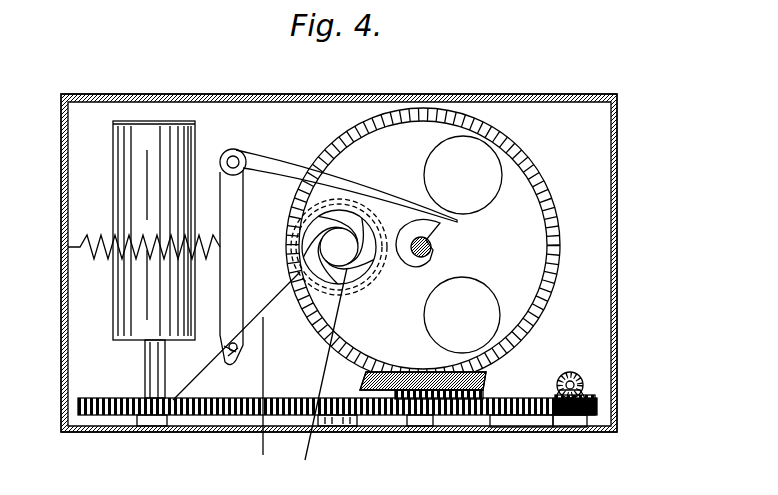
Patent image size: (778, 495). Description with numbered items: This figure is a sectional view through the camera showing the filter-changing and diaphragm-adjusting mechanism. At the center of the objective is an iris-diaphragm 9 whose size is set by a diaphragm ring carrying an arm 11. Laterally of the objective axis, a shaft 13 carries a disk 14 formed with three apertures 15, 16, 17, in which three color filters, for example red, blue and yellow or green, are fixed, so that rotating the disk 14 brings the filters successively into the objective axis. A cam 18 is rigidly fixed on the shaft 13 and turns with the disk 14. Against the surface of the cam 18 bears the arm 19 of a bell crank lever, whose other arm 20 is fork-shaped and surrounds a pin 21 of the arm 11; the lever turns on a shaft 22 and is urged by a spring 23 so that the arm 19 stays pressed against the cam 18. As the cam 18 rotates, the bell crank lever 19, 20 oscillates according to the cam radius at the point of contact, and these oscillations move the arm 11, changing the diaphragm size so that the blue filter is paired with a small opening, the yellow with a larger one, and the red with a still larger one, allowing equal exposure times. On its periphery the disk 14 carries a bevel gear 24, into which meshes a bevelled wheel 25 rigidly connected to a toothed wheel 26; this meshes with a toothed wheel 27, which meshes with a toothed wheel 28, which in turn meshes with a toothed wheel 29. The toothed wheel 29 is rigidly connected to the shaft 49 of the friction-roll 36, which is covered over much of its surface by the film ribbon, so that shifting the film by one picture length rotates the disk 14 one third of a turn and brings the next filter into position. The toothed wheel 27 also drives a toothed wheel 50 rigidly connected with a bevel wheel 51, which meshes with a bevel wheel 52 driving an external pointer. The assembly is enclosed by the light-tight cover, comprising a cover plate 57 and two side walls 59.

The iris-diaphragm 9 is at (357, 220).
The arm 11 is at (258, 396).
The shaft 13 is at (433, 250).
The disk 14 is at (517, 220).
The aperture 15 is at (320, 373).
The aperture 16 is at (460, 152).
The aperture 17 is at (492, 322).
The cam 18 is at (427, 232).
The arm 19 is at (288, 160).
The arm 20 is at (235, 212).
The pin 21 is at (143, 428).
The shaft 22 is at (234, 156).
The spring 23 is at (88, 247).
The bevel gear 24 is at (562, 236).
The bevelled wheel 25 is at (355, 430).
The toothed wheel 26 is at (413, 428).
The toothed wheel 27 is at (492, 411).
The toothed wheel 28 is at (390, 391).
The toothed wheel 29 is at (78, 406).
The friction-roll 36 is at (133, 295).
The shaft 49 is at (155, 378).
The toothed wheel 50 is at (595, 408).
The bevel wheel 51 is at (590, 395).
The bevel wheel 52 is at (582, 383).
The cover plate 57 is at (588, 97).
The side walls 59 is at (62, 185).